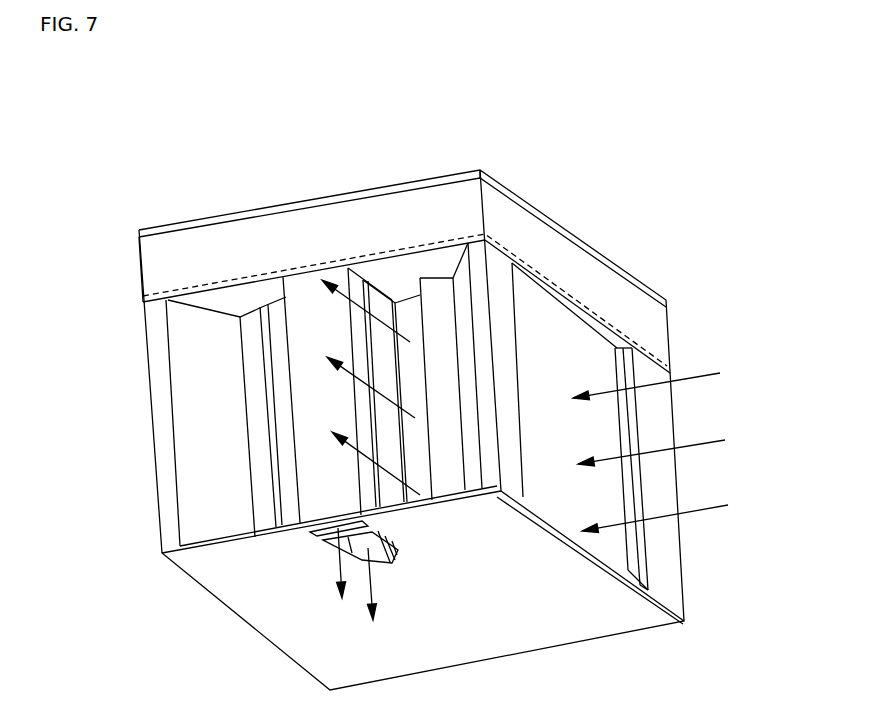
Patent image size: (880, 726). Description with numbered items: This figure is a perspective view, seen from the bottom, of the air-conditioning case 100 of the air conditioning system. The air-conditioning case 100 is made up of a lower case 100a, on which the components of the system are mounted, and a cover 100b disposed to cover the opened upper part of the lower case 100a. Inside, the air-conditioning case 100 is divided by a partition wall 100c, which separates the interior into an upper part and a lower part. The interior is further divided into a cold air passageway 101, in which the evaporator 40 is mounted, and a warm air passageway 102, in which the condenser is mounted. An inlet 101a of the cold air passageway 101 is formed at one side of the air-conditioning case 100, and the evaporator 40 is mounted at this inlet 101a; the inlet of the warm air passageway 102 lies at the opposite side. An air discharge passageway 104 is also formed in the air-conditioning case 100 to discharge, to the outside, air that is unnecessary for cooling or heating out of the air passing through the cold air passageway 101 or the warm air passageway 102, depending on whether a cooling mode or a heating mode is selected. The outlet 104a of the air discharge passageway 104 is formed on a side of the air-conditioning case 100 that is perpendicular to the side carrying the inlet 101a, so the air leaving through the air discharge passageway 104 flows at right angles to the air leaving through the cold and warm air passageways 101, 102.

The air-conditioning case 100 is at (542, 189).
The lower case 100a is at (425, 212).
The cover 100b is at (452, 177).
The partition wall 100c is at (185, 289).
The cold air passageway 101 is at (398, 294).
The inlet of the cold air passageway 101a is at (632, 532).
The warm air passageway 102 is at (235, 306).
The air discharge passageway 104 is at (358, 550).
The outlet of the air discharge passageway 104a is at (368, 556).
The evaporator 40 is at (613, 549).